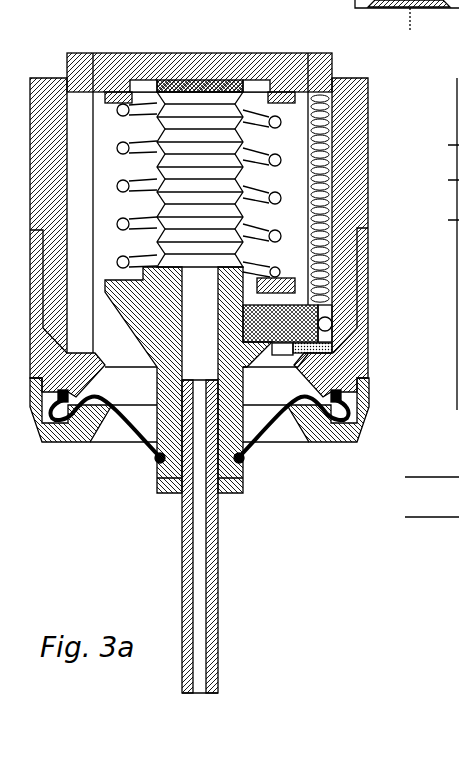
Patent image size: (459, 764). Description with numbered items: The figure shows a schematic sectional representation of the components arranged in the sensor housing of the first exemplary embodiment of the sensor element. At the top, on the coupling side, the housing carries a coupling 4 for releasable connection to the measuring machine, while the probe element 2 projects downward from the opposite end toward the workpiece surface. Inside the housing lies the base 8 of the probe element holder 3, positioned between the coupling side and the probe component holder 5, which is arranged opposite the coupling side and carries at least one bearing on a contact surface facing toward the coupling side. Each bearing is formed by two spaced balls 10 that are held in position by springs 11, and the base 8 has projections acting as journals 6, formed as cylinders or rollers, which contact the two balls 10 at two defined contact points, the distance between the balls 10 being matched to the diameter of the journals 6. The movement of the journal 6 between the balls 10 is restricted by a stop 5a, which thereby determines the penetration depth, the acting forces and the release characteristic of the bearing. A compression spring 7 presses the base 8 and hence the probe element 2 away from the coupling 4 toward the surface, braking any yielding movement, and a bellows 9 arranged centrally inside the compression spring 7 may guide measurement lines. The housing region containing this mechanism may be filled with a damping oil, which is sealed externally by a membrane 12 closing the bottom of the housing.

The probe element 2 is at (213, 655).
The probe element holder 3 is at (243, 478).
The coupling 4 is at (207, 53).
The probe component holder 5 is at (55, 372).
The stop 5a is at (333, 351).
The journal 6 is at (330, 310).
The compression spring 7 is at (340, 232).
The base 8 is at (245, 280).
The bellows 9 is at (217, 212).
The balls 10 is at (325, 322).
The springs 11 is at (327, 123).
The membrane 12 is at (239, 460).